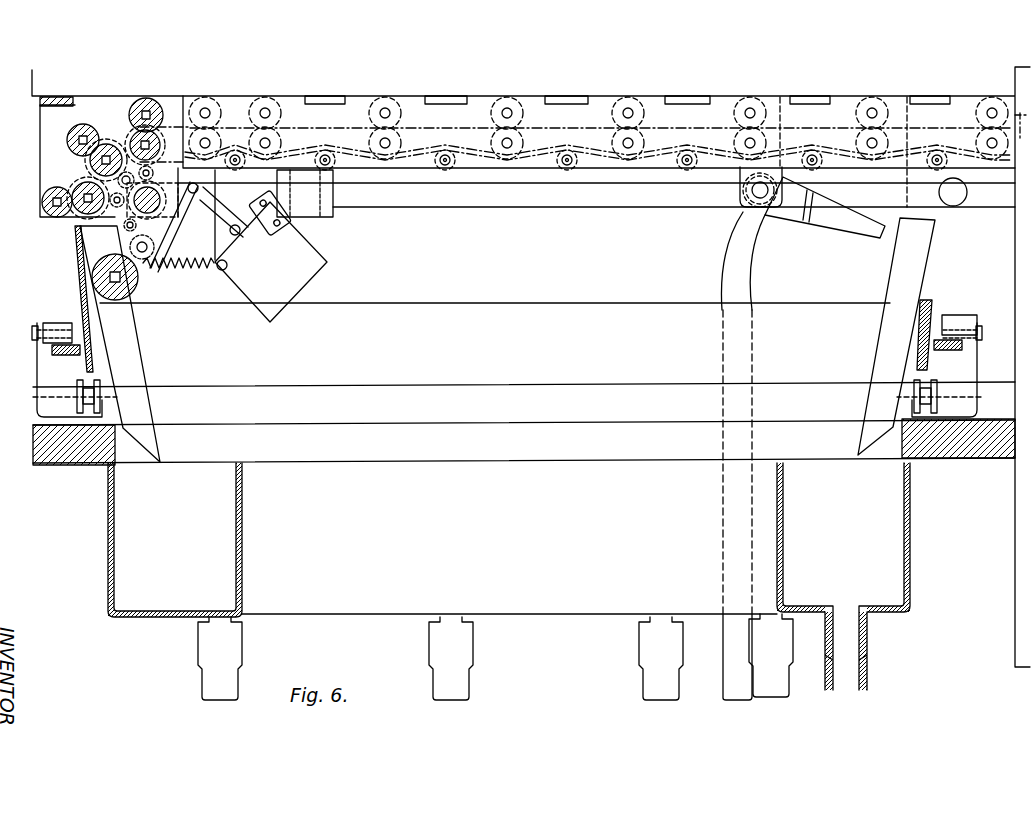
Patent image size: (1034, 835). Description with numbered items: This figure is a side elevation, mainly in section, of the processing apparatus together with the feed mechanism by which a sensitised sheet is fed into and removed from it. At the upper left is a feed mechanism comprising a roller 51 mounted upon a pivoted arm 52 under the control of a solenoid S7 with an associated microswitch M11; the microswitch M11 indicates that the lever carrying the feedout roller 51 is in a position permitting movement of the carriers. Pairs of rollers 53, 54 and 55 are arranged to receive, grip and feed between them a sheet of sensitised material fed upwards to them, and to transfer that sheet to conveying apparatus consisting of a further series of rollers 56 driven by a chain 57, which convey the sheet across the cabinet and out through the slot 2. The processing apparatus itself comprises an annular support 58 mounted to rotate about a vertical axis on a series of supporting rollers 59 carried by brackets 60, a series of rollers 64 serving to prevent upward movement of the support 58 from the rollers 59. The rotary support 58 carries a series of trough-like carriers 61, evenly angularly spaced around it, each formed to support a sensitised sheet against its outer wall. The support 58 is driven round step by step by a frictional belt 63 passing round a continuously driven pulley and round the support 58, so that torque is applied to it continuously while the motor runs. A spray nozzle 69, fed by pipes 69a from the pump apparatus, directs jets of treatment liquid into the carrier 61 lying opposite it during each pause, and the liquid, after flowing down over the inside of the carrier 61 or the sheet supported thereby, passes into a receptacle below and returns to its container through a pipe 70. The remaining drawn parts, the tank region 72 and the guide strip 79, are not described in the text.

The slot 2 is at (1022, 136).
The roller 51 is at (100, 283).
The pivoted arm 52 is at (164, 211).
The pair of rollers 53 is at (66, 216).
The pair of rollers 54 is at (80, 147).
The pair of rollers 55 is at (132, 126).
The series of rollers 56 is at (248, 110).
The chain 57 is at (598, 157).
The annular support 58 is at (86, 318).
The supporting rollers 59 is at (92, 414).
The brackets 60 is at (45, 420).
The carriers 61 is at (133, 374).
The frictional belt 63 is at (78, 348).
The rollers 64 is at (52, 322).
The spray nozzle 69 is at (833, 214).
The pipes 69a is at (732, 283).
The pipe 70 is at (207, 667).
The tank 72 is at (465, 307).
The guide rail 79 is at (930, 300).
The microswitch M11 is at (287, 233).
The solenoid S7 is at (310, 276).